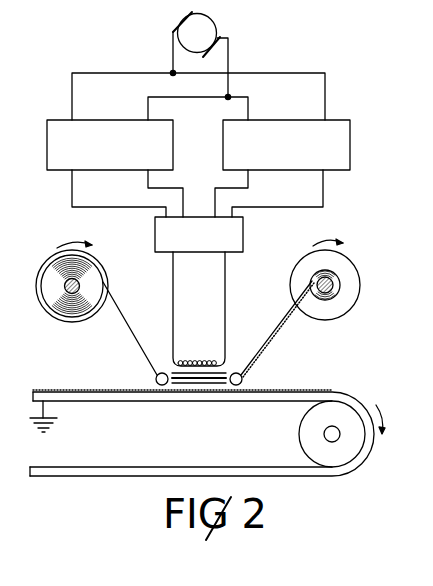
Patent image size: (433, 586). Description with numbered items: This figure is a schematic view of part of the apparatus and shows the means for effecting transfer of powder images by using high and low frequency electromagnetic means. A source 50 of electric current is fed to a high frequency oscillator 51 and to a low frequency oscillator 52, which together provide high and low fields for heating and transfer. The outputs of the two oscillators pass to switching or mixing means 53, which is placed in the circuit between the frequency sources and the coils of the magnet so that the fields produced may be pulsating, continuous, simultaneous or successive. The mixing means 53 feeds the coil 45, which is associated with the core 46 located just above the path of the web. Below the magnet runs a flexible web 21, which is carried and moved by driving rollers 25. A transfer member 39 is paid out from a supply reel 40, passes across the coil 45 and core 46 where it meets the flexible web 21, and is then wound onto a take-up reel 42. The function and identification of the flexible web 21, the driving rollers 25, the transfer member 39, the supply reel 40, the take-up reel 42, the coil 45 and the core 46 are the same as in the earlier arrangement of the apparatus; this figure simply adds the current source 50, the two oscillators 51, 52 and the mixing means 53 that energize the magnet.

The flexible web 21 is at (73, 481).
The driving rollers 25 is at (341, 410).
The transfer member 39 is at (115, 305).
The supply reel 40 is at (48, 316).
The take-up reel 42 is at (338, 318).
The coil 45 is at (184, 357).
The core 46 is at (170, 372).
The source of electric current 50 is at (216, 25).
The high frequency oscillator 51 is at (118, 118).
The low frequency oscillator 52 is at (275, 118).
The switching or mixing means 53 is at (243, 229).